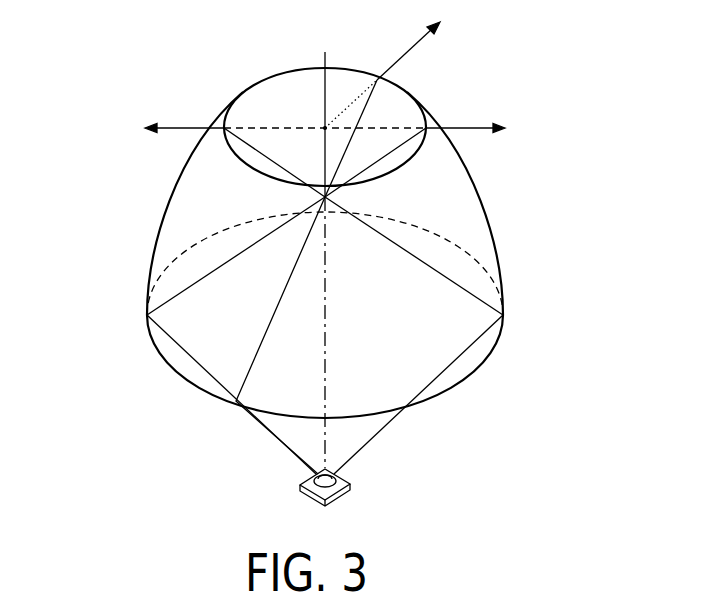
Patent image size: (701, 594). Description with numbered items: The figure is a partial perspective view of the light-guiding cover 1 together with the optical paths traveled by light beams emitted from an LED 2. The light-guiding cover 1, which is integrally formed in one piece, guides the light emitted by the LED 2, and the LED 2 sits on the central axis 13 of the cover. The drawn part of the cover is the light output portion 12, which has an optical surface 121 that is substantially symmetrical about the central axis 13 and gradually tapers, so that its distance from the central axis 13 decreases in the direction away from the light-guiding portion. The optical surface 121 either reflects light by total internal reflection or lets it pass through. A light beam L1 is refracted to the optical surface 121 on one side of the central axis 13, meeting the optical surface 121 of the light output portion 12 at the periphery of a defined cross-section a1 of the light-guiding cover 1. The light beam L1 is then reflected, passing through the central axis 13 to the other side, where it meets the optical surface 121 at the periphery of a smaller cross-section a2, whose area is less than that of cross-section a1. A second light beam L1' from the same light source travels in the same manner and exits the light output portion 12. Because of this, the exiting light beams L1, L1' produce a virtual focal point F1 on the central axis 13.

The light-guiding cover 1 is at (319, 237).
The LED 2 is at (362, 498).
The light output portion 12 is at (382, 224).
The optical surface 121 is at (482, 223).
The central axis 13 is at (327, 62).
The cross-section a1 is at (468, 364).
The cross-section a2 is at (258, 93).
The virtual focal point F1 is at (338, 104).
The light beam L1 is at (381, 128).
The light beam L1' is at (295, 98).